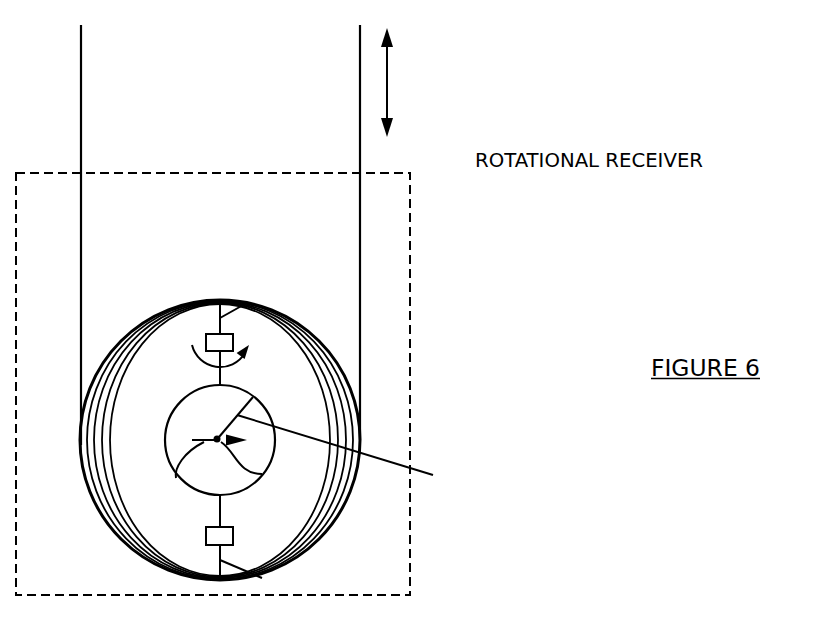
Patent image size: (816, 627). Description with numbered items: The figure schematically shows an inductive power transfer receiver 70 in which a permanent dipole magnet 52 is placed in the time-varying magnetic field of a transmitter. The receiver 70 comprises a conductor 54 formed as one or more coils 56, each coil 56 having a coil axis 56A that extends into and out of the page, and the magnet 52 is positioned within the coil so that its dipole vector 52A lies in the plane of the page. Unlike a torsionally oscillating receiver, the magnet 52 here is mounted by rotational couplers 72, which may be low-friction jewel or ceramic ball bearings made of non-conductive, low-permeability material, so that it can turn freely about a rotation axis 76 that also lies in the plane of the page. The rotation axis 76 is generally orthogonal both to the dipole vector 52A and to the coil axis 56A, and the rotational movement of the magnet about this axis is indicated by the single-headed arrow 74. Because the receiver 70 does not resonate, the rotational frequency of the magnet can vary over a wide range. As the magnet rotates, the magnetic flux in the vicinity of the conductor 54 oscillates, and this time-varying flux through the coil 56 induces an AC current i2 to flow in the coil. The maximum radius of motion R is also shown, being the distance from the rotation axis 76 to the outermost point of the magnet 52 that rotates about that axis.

The inductive power transfer receiver 70 is at (475, 318).
The AC current i2 is at (388, 77).
The conductor 54 is at (200, 440).
The coil 56 is at (119, 526).
The rotational couplers 72 is at (216, 341).
The single-headed arrow 74 is at (190, 363).
The rotation axis 76 is at (247, 304).
The permanent dipole magnet 52 is at (187, 425).
The dipole vector 52A is at (176, 478).
The coil axis 56A is at (262, 474).
The maximum radius of motion R is at (433, 475).